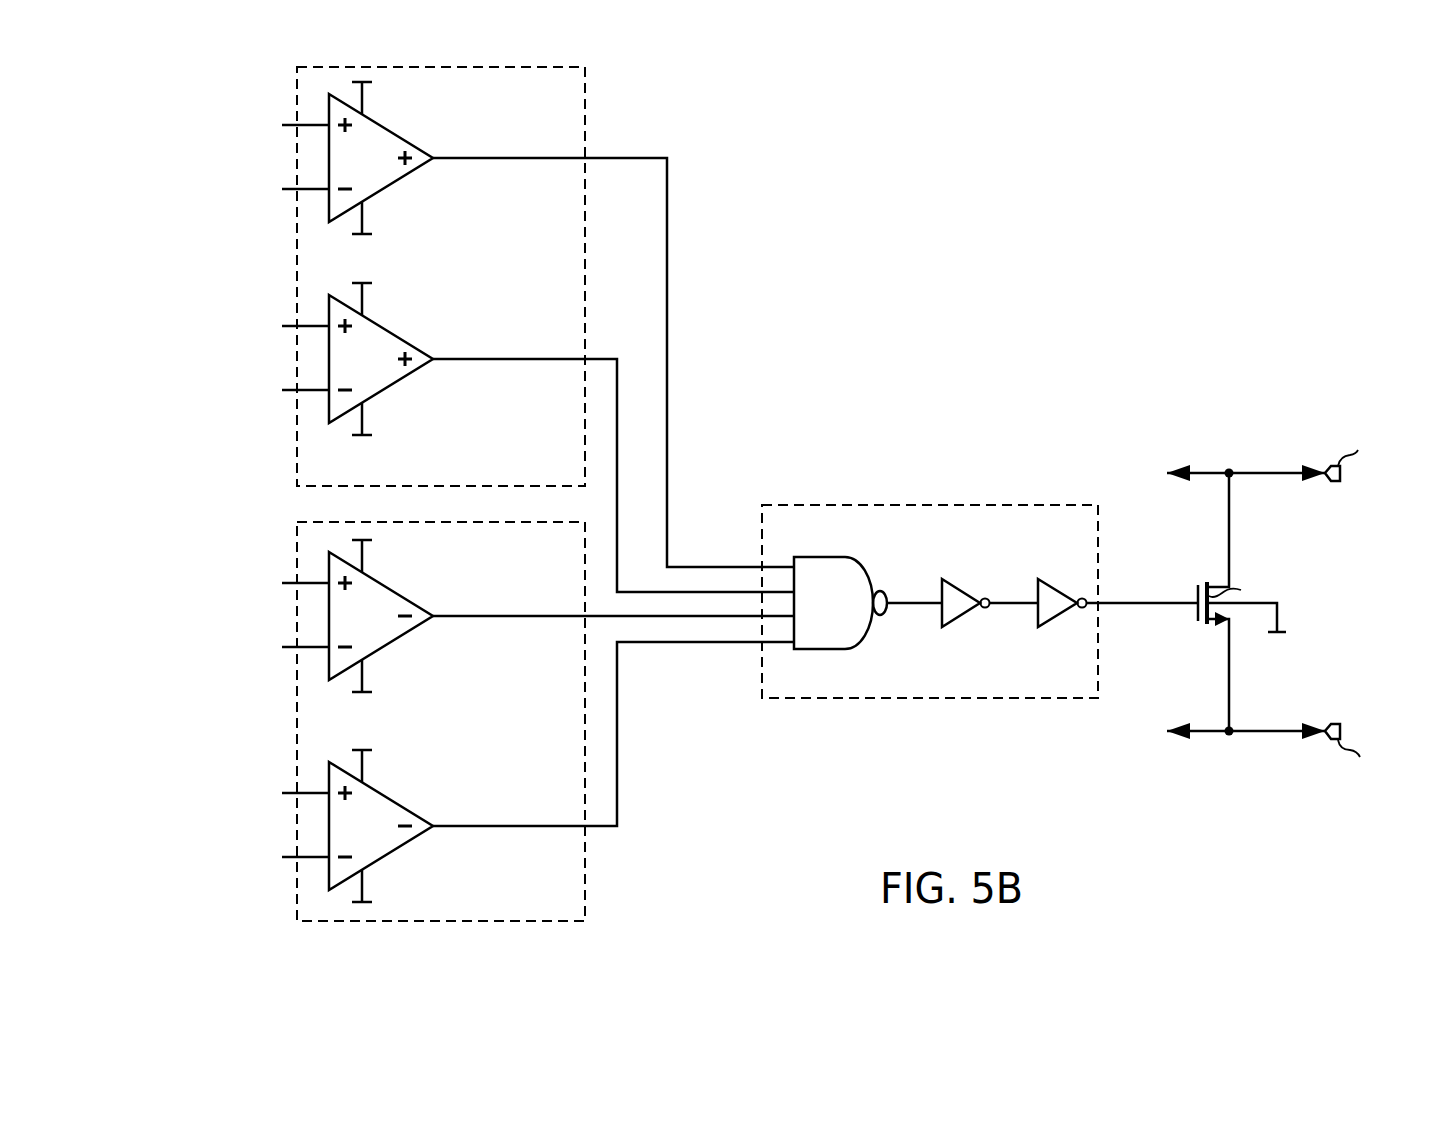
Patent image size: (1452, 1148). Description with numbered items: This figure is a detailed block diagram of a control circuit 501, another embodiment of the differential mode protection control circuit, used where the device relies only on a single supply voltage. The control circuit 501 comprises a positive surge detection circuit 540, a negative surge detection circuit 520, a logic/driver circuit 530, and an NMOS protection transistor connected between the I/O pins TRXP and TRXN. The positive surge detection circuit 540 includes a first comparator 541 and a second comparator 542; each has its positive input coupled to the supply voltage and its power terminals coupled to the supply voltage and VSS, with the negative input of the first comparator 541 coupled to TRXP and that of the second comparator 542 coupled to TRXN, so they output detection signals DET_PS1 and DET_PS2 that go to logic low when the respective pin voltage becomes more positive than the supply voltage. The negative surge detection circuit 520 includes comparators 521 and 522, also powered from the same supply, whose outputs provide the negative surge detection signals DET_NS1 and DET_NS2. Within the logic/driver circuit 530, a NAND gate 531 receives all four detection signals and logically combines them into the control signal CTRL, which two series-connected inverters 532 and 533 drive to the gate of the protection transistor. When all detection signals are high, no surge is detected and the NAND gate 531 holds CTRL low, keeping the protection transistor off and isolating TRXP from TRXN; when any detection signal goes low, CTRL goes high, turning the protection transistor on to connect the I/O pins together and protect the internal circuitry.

The control circuit 501 is at (1204, 167).
The positive surge detection circuit 540 is at (399, 276).
The first comparator 541 is at (405, 135).
The second comparator 542 is at (405, 336).
The negative surge detection circuit 520 is at (399, 721).
The comparator 521 is at (405, 593).
The comparator 522 is at (405, 803).
The logic/driver circuit 530 is at (930, 601).
The NAND gate 531 is at (805, 557).
The inverter 532 is at (957, 581).
The inverter 533 is at (1052, 627).